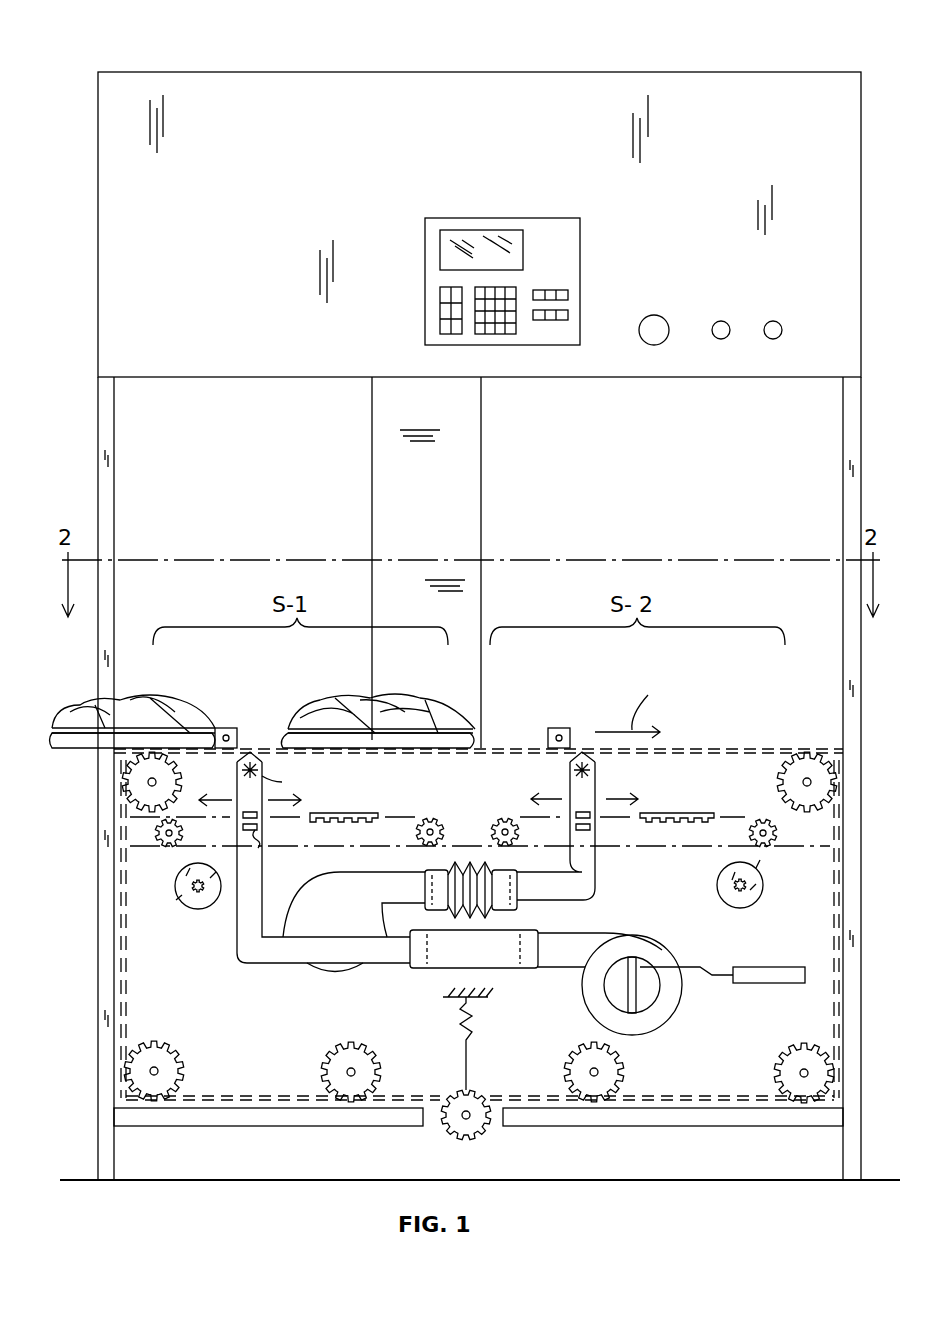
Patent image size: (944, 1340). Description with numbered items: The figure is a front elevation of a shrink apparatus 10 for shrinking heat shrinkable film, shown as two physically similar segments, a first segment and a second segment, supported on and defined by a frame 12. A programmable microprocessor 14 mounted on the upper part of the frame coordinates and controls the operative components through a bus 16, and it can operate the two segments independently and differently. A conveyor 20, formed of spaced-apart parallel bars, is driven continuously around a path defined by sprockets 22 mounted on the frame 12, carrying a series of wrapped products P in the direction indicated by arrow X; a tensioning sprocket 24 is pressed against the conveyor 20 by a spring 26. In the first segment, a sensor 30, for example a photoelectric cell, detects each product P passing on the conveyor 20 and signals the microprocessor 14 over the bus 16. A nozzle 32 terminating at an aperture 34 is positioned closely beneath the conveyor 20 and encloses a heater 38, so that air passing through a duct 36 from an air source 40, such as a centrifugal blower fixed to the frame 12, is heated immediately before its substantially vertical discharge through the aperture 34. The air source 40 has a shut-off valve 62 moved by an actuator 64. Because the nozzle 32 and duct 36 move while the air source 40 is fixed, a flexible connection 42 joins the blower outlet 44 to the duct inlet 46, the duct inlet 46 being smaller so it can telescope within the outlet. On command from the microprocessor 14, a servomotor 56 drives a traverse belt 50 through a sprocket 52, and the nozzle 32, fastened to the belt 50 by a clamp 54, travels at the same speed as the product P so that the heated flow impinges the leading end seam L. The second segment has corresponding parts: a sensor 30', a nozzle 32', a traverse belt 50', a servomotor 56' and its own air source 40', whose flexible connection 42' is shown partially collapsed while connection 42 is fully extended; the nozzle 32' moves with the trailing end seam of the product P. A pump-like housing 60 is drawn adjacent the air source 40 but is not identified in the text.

The shrink apparatus 10 is at (805, 60).
The frame 12 is at (114, 403).
The programmable microprocessor 14 is at (572, 250).
The bus 16 is at (481, 410).
The conveyor 20 is at (708, 748).
The sprockets 22 is at (130, 790).
The tensioning sprocket 24 is at (485, 1132).
The spring 26 is at (458, 1016).
The sensor 30 is at (241, 713).
The sensor 30' is at (562, 712).
The nozzle 32 is at (225, 796).
The nozzle 32' is at (551, 826).
The aperture 34 is at (258, 764).
The duct 36 is at (237, 945).
The heater 38 is at (270, 782).
The air source 40 is at (619, 936).
The air source 40' is at (347, 897).
The flexible connection 42 is at (491, 986).
The flexible connection 42' is at (471, 869).
The blower outlet 44 is at (522, 946).
The duct inlet 46 is at (430, 962).
The traverse belt 50 is at (344, 803).
The traverse belt 50' is at (677, 799).
The sprocket 52 is at (168, 848).
The clamp 54 is at (260, 830).
The servomotor 56 is at (181, 896).
The servomotor 56' is at (756, 897).
The pump housing 60 is at (668, 1000).
The shut-off valve 62 is at (600, 1000).
The actuator 64 is at (768, 982).
The leading transverse end seam L is at (226, 700).
The product P is at (332, 696).
The direction arrow X is at (627, 705).